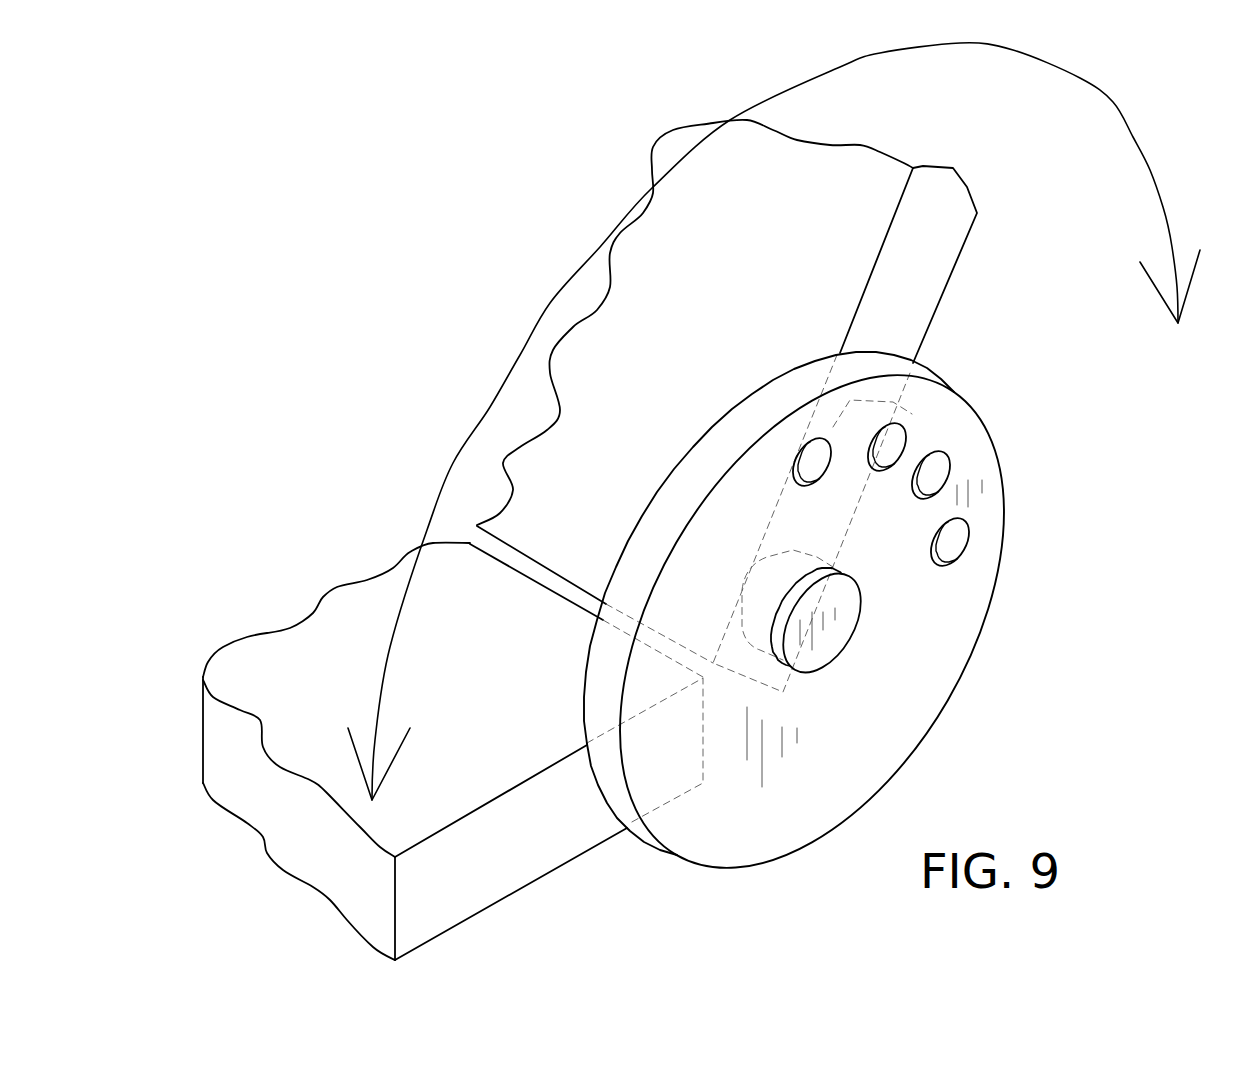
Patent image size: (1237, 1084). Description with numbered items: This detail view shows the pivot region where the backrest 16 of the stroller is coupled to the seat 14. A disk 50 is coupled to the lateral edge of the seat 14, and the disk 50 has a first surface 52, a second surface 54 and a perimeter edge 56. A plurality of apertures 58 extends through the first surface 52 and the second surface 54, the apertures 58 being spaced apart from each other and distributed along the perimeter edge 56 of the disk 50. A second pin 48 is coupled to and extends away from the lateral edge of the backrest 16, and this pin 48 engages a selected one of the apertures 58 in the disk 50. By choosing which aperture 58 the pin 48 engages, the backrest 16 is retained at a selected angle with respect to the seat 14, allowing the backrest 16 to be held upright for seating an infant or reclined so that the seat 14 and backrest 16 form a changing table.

The seat 14 is at (580, 852).
The backrest 16 is at (947, 292).
The second pin 48 is at (895, 452).
The disk 50 is at (925, 682).
The first surface 52 is at (817, 795).
The second surface 54 is at (715, 415).
The perimeter edge 56 is at (782, 398).
The apertures 58 is at (960, 547).